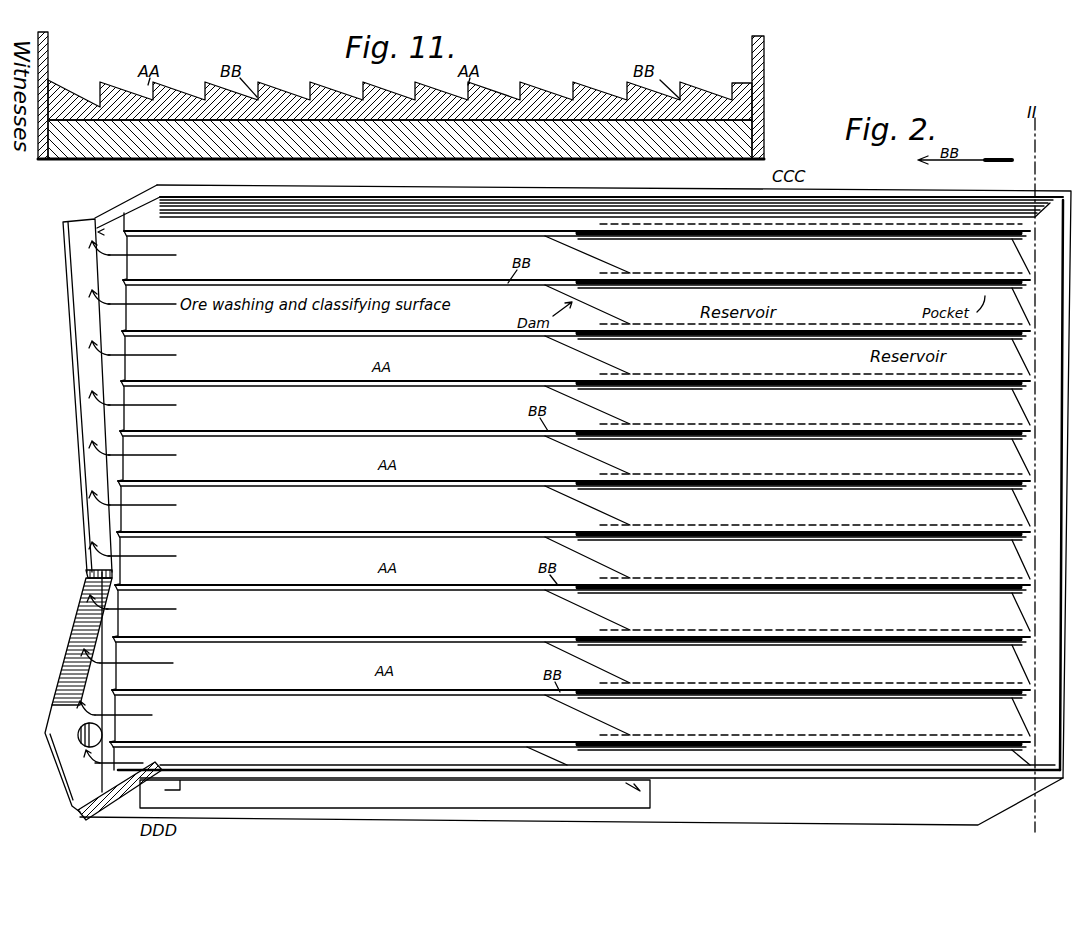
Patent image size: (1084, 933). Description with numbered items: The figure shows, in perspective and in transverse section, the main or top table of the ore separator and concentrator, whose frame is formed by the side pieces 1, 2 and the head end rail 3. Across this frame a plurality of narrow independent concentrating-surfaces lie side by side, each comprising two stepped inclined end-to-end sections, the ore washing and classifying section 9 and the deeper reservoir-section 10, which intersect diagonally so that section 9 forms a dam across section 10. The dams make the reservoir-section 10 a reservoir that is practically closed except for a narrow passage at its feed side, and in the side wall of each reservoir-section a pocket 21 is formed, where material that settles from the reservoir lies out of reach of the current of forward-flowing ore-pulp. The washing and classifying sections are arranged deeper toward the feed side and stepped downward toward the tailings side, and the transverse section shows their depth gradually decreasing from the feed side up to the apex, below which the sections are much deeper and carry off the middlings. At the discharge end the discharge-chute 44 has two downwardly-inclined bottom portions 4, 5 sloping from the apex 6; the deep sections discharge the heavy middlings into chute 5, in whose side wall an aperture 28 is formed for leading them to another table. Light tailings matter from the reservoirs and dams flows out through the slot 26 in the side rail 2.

In FIG. 11, the side piece 1 is at (56, 50).
In FIG. 2, the side piece 1 is at (675, 197).
In FIG. 11, the side piece 2 is at (768, 97).
In FIG. 2, the side piece 2 is at (571, 797).
In FIG. 2, the head end rail 3 is at (1048, 485).
In FIG. 2, the downwardly-inclined bottom portion 4 is at (88, 462).
In FIG. 2, the discharge-chute 44 is at (88, 503).
In FIG. 2, the downwardly-inclined bottom portion 5 is at (62, 690).
In FIG. 2, the apex 6 is at (84, 573).
In FIG. 11, the stepped inclined section 9 is at (277, 86).
In FIG. 2, the stepped inclined section 9 is at (566, 491).
In FIG. 2, the reservoir-section 10 is at (811, 479).
In FIG. 2, the pocket 21 is at (883, 233).
In FIG. 2, the slot 26 is at (375, 795).
In FIG. 2, the aperture 28 is at (78, 727).